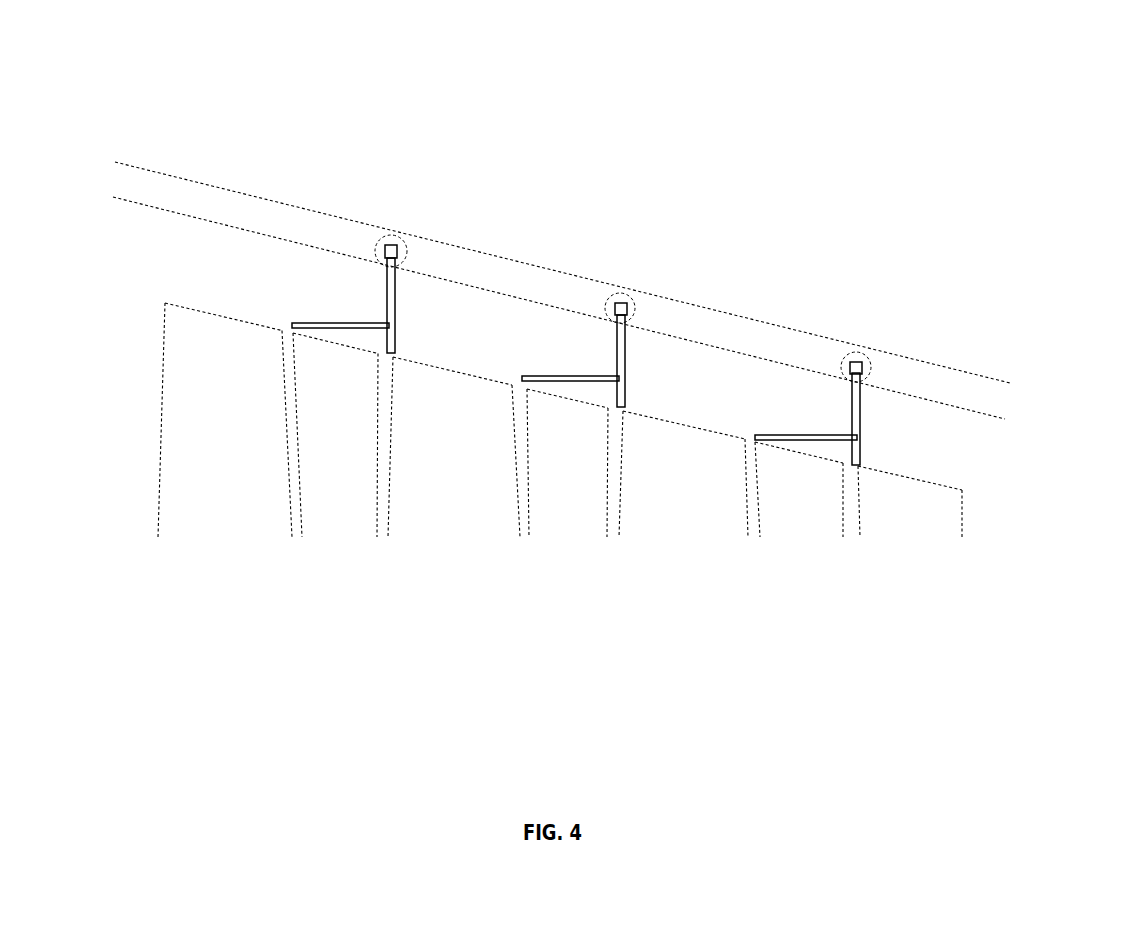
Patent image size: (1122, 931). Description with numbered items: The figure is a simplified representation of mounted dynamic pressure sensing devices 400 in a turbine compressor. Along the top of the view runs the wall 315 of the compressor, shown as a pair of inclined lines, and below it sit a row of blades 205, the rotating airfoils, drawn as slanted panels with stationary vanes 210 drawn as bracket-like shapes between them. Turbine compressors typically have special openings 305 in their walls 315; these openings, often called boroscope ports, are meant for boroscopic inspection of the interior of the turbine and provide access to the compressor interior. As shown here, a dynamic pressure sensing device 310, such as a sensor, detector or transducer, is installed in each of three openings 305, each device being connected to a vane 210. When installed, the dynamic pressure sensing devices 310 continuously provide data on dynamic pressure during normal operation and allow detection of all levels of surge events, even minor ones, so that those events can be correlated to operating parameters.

The mounted dynamic pressure sensing devices 400 is at (1007, 120).
The wall 315 is at (242, 212).
The blade 205 is at (222, 314).
The vane 210 is at (342, 323).
The opening 305 is at (403, 237).
The dynamic pressure sensing device 310 is at (404, 250).